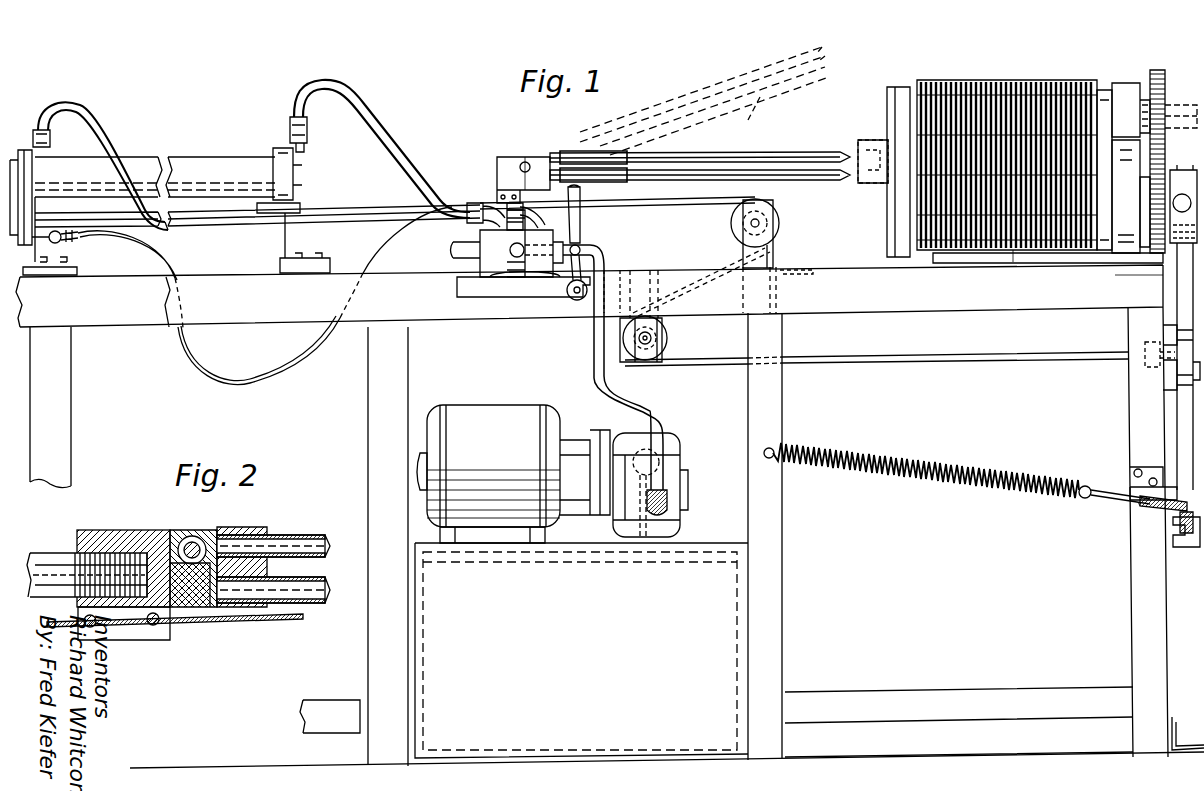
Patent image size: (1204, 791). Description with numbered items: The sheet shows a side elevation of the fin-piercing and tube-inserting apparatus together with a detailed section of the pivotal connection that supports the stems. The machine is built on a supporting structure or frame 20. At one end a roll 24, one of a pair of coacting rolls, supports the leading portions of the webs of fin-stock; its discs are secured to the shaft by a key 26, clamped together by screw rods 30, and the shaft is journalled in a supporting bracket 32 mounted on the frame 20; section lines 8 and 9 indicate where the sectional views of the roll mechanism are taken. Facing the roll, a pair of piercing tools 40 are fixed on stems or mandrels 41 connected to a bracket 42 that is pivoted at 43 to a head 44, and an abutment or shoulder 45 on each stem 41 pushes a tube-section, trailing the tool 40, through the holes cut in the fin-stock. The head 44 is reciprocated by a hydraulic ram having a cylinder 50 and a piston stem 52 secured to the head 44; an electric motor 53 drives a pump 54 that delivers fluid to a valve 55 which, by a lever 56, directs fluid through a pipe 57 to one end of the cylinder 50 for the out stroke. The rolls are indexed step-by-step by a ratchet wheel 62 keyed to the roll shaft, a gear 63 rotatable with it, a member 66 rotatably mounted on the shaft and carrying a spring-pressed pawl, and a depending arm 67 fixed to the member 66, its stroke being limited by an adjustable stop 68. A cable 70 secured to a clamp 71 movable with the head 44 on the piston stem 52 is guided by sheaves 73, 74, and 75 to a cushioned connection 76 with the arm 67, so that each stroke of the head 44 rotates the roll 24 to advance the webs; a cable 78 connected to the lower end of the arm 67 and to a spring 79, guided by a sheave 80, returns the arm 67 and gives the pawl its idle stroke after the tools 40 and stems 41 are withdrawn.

In FIG. 1, the section line 8— 8 is at (987, 73).
In FIG. 1, the section line 9— 9 is at (958, 248).
In FIG. 1, the supporting structure or frame 20 is at (866, 302).
In FIG. 1, the roll 24 is at (1043, 84).
In FIG. 1, the key 26 is at (1016, 258).
In FIG. 1, the screw rods 30 is at (1130, 86).
In FIG. 1, the supporting bracket 32 is at (890, 221).
In FIG. 1, the piercing tool 40 is at (850, 157).
In FIG. 1, the stem or mandrel 41 is at (718, 172).
In FIG. 2, the stem or mandrel 41 is at (340, 580).
In FIG. 1, the bracket 42 is at (550, 158).
In FIG. 2, the bracket 42 is at (252, 530).
In FIG. 1, the pivot 43 is at (527, 161).
In FIG. 2, the pivot 43 is at (193, 537).
In FIG. 1, the head 44 is at (500, 157).
In FIG. 2, the head 44 is at (140, 530).
In FIG. 1, the abutment or shoulder 45 is at (642, 165).
In FIG. 1, the cylinder 50 is at (218, 158).
In FIG. 1, the piston stem 52 is at (334, 172).
In FIG. 1, the electric motor 53 is at (517, 410).
In FIG. 1, the pump 54 is at (682, 452).
In FIG. 1, the valve 55 is at (508, 285).
In FIG. 1, the lever 56 is at (582, 218).
In FIG. 1, the pipe 57 is at (100, 136).
In FIG. 1, the ratchet wheel 62 is at (1168, 90).
In FIG. 1, the gear 63 is at (1172, 172).
In FIG. 1, the member 66 is at (1183, 245).
In FIG. 1, the depending arm 67 is at (1187, 419).
In FIG. 1, the adjustable stop 68 is at (383, 150).
In FIG. 1, the cable 70 is at (862, 358).
In FIG. 1, the clamp 71 is at (497, 190).
In FIG. 2, the clamp 71 is at (138, 640).
In FIG. 1, the sheave 73 is at (733, 231).
In FIG. 1, the sheave 74 is at (668, 350).
In FIG. 1, the sheave 75 is at (1143, 352).
In FIG. 1, the cushioned connection 76 is at (1187, 549).
In FIG. 1, the cable 78 is at (1108, 502).
In FIG. 1, the spring 79 is at (1007, 494).
In FIG. 1, the sheave 80 is at (1140, 503).